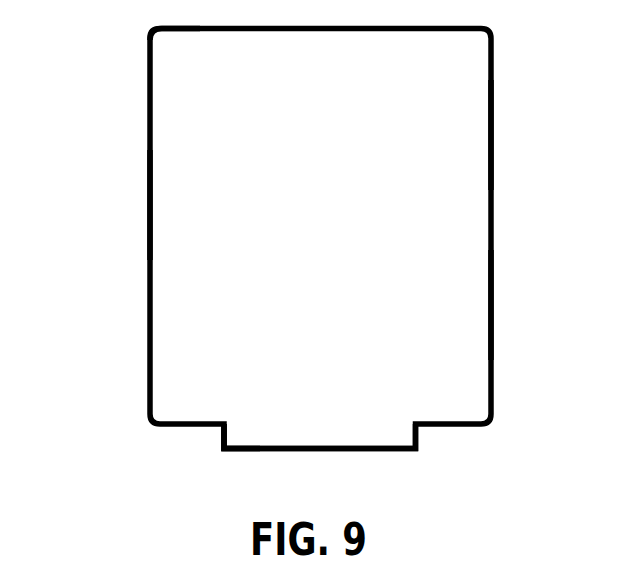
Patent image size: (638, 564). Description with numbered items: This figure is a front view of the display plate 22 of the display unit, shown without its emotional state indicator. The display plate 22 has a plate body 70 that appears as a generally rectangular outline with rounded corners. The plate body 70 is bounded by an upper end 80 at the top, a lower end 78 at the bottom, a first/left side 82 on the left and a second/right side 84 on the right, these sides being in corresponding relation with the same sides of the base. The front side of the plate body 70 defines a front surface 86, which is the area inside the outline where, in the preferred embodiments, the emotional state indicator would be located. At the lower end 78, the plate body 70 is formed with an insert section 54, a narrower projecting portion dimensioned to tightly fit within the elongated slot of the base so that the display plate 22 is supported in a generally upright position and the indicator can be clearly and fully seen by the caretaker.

The plate body 70 is at (443, 202).
The upper end 80 is at (137, 30).
The first/left side 82 is at (128, 205).
The second/right side 84 is at (501, 135).
The display plate 22 is at (494, 299).
The front surface 86 is at (207, 277).
The lower end 78 is at (210, 444).
The insert section 54 is at (371, 434).